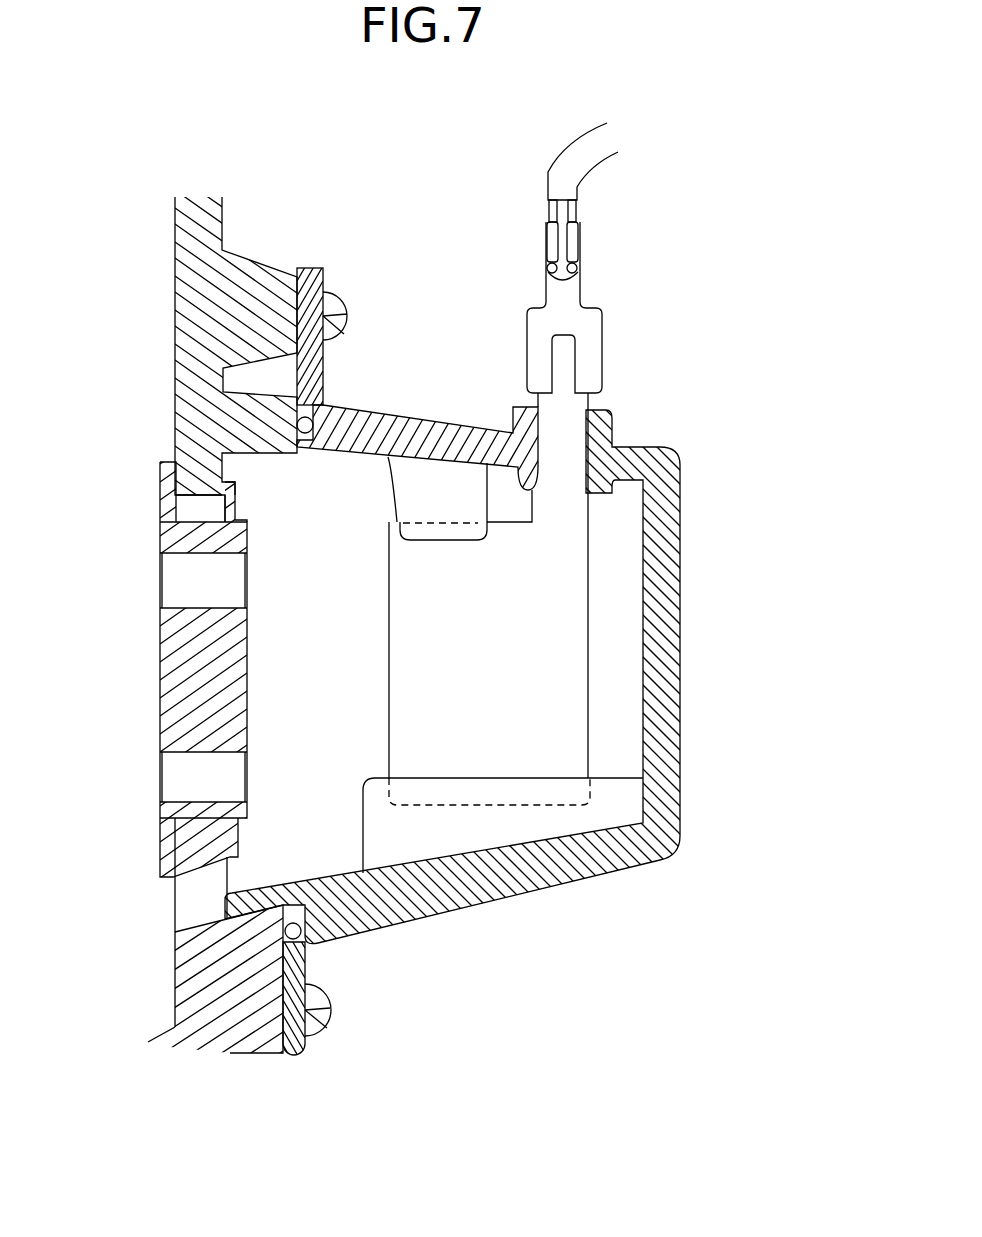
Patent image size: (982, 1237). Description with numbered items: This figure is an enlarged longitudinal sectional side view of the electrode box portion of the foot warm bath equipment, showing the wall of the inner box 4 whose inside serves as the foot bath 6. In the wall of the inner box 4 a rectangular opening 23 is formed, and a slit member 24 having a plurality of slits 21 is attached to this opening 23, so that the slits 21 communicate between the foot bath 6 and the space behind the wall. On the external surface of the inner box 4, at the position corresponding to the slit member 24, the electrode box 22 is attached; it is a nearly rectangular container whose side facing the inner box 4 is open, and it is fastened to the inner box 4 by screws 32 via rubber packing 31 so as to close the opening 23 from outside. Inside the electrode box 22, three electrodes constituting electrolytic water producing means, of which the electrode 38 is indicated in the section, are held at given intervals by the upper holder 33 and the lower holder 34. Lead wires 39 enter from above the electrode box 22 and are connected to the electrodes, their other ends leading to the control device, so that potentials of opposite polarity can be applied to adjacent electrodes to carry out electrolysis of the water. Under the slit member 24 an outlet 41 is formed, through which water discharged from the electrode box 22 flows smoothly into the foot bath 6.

The inner box 4 is at (175, 250).
The foot bath 6 is at (62, 643).
The slits 21 is at (183, 580).
The electrode box 22 is at (678, 573).
The opening 23 is at (177, 463).
The slit member 24 is at (160, 672).
The rubber packing 31 is at (322, 407).
The screws 32 is at (340, 317).
The upper holder 33 is at (390, 493).
The lower holder 34 is at (363, 803).
The electrode 38 is at (590, 676).
The lead wires 39 is at (583, 303).
The outlet 41 is at (183, 910).